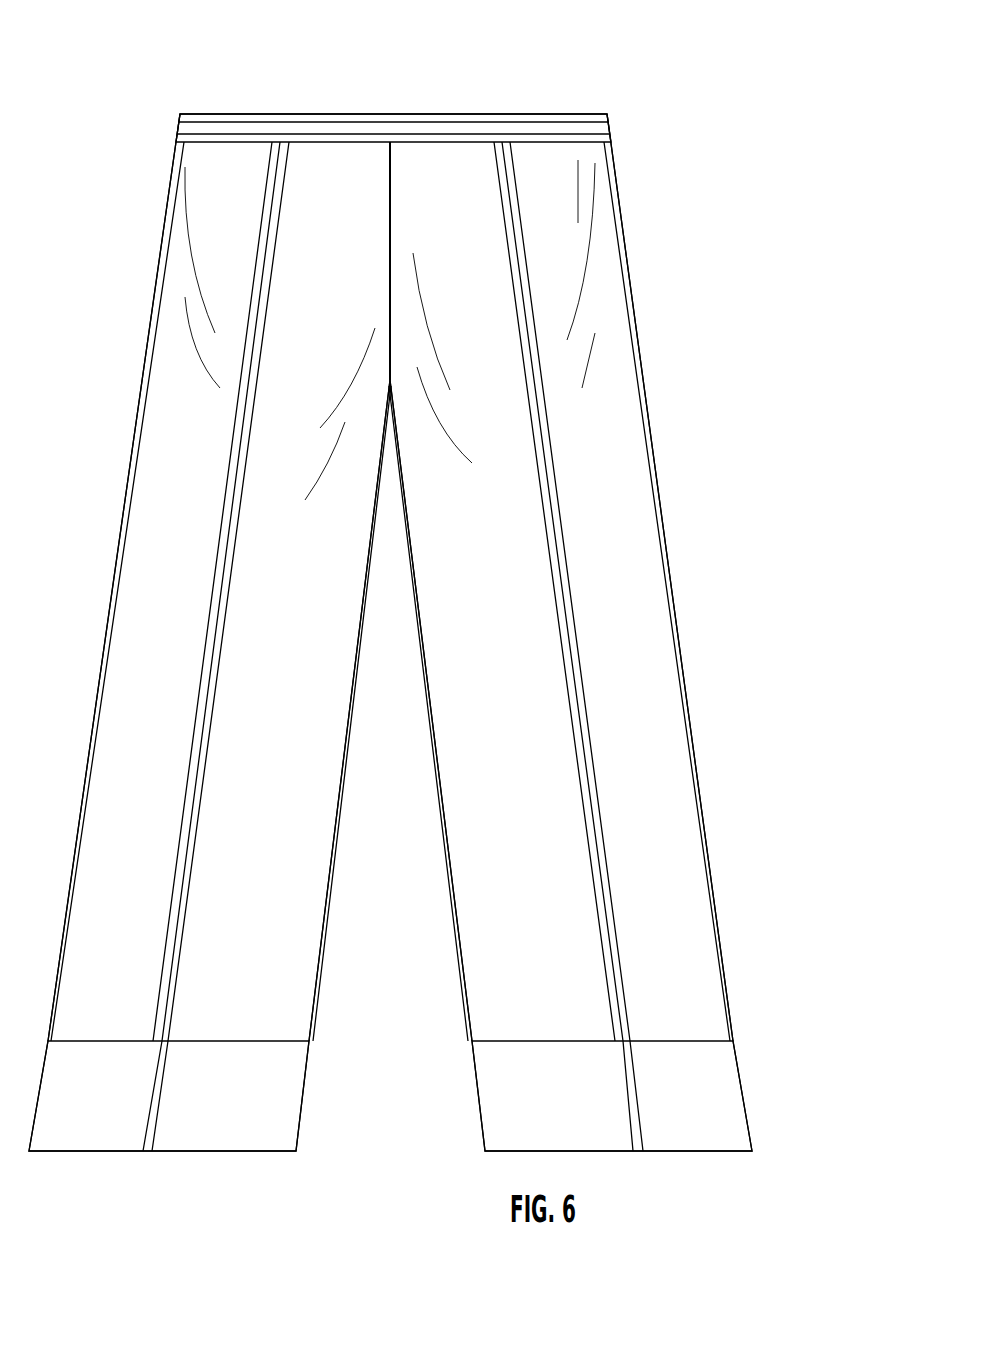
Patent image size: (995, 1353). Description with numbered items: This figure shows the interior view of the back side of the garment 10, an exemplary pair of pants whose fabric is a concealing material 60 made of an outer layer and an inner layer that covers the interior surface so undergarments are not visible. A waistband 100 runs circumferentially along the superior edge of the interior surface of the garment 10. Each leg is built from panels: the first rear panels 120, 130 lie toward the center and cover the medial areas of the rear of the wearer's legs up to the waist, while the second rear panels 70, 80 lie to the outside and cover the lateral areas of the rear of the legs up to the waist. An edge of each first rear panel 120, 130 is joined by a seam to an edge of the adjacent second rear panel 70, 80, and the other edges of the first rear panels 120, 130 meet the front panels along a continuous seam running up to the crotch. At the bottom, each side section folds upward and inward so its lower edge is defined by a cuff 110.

The garment 10 is at (105, 88).
The concealing material 60 is at (622, 562).
The second rear panel 70 is at (103, 797).
The second rear panel 80 is at (685, 860).
The waistband 100 is at (583, 127).
The cuff 110 is at (496, 1094).
The first rear panel 120 is at (306, 903).
The first rear panel 130 is at (462, 773).